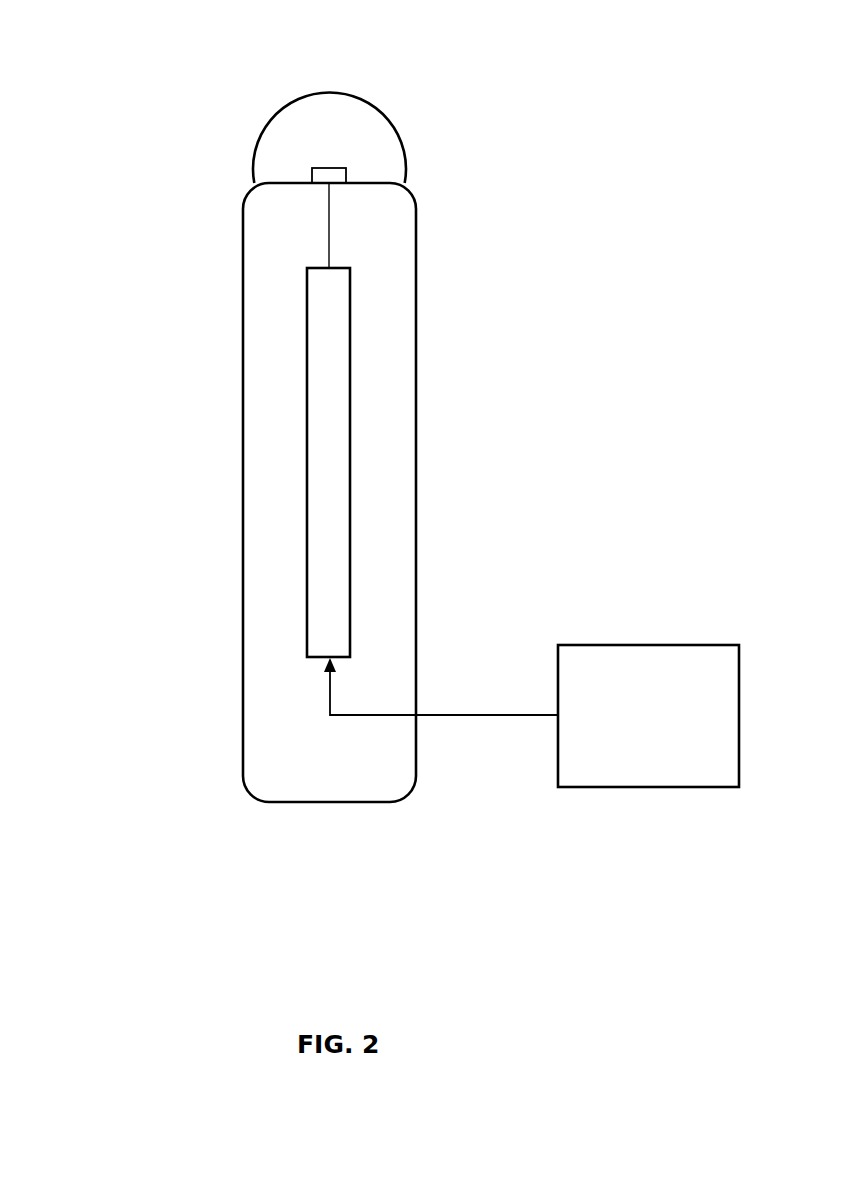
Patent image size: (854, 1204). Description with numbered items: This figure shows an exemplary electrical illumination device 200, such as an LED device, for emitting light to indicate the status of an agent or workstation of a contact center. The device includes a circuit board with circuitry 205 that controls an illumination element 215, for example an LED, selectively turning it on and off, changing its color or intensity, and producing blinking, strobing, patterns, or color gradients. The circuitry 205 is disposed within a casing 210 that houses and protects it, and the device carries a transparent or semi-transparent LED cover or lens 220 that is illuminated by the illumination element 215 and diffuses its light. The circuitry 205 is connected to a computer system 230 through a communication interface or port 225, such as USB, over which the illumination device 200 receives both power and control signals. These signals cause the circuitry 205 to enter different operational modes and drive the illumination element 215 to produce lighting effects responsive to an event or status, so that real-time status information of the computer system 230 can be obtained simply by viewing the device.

The electrical illumination device 200 is at (98, 152).
The circuitry 205 is at (351, 356).
The casing 210 is at (245, 485).
The illumination element 215 is at (352, 173).
The LED cover or lens 220 is at (310, 98).
The communication interface or port 225 is at (466, 717).
The computer system 230 is at (648, 716).